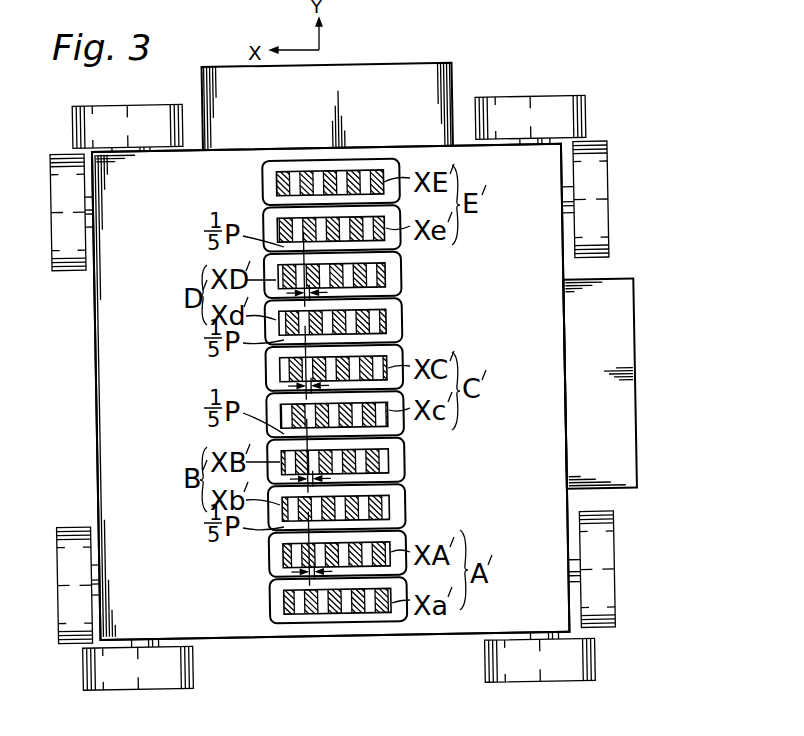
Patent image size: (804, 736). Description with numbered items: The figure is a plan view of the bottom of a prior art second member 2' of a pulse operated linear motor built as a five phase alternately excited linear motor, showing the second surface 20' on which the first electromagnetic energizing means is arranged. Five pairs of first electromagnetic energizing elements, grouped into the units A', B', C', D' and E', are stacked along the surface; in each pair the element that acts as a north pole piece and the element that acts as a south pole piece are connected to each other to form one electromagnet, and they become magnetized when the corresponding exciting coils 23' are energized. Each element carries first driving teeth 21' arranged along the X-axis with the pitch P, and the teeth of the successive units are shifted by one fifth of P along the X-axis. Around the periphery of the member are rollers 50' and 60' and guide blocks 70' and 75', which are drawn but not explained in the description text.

The second member 2' is at (316, 392).
The second surface 20' is at (330, 392).
The first driving teeth 21' is at (331, 394).
The exciting coils 23' is at (335, 391).
The X-direction rollers 50' is at (332, 393).
The Y-direction rollers 60' is at (349, 418).
The X-axis guide block 70' is at (356, 103).
The Y-axis guide block 75' is at (612, 370).